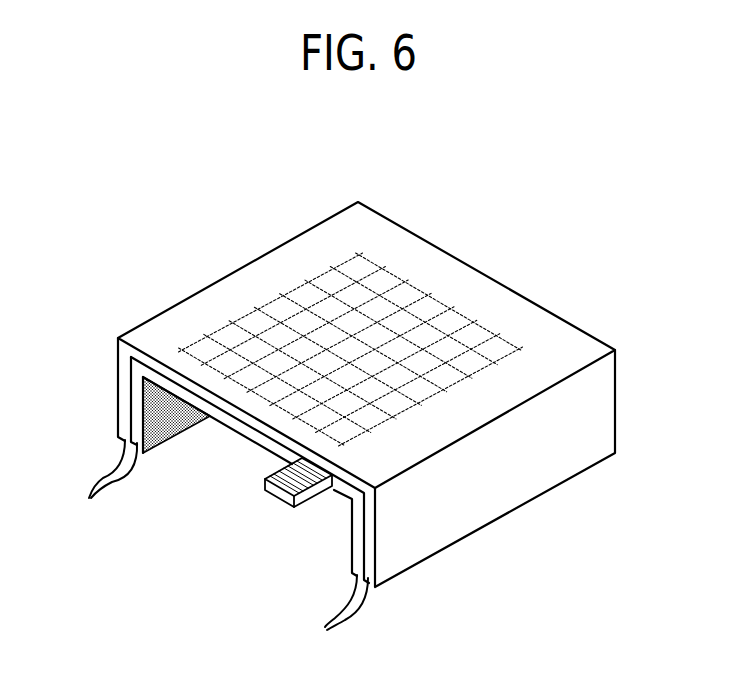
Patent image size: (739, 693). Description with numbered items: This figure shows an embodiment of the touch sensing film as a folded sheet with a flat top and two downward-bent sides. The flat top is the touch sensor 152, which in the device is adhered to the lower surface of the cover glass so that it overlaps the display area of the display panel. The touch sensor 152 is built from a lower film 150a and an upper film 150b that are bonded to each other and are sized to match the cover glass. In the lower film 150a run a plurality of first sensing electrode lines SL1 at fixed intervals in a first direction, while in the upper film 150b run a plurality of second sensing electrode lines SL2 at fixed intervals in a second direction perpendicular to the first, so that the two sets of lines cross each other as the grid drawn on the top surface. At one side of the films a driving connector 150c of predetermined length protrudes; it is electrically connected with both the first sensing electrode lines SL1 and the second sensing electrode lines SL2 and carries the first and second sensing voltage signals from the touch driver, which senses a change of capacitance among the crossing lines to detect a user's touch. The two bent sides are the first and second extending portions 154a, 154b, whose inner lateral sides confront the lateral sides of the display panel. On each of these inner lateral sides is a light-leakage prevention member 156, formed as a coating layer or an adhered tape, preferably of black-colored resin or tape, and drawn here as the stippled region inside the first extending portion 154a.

The touch sensor 152 is at (497, 292).
The first sensing electrode lines SL1 is at (418, 283).
The second sensing electrode lines SL2 is at (428, 297).
The lower film 150a is at (235, 425).
The upper film 150b is at (272, 430).
The driving connector 150c is at (287, 493).
The first extending portion 154a is at (102, 482).
The second extending portion 154b is at (335, 617).
The light-leakage prevention member 156 is at (160, 433).